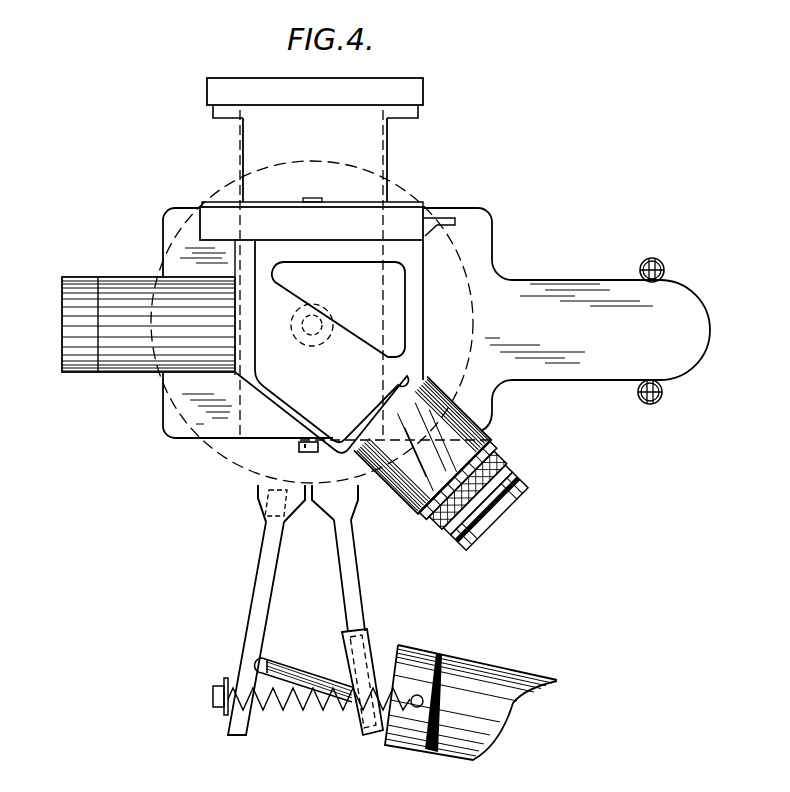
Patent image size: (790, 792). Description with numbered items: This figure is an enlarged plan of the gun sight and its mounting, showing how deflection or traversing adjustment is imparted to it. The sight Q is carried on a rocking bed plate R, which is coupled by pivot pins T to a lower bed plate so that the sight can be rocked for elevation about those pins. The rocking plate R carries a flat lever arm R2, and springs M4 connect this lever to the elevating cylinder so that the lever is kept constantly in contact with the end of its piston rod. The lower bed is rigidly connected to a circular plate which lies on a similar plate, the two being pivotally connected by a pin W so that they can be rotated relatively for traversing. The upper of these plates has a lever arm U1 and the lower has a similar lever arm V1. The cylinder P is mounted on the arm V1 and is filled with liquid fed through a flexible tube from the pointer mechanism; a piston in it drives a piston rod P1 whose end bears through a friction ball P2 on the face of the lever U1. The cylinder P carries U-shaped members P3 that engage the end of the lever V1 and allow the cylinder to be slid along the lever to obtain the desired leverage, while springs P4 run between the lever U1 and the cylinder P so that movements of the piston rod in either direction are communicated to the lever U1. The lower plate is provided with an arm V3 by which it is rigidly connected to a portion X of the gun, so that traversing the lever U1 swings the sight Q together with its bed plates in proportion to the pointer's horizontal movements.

The portion of the gun X is at (407, 92).
The arm V3 is at (367, 140).
The pivot pins T is at (303, 200).
The bed plate R is at (480, 262).
The lever arm R2 is at (569, 323).
The springs M4 is at (652, 257).
The pin W is at (313, 324).
The sight Q is at (503, 462).
The lever arm U1 is at (265, 565).
The lever arm V1 is at (352, 575).
The cylinder P is at (505, 672).
The piston rod P1 is at (320, 676).
The friction ball P2 is at (262, 662).
The U-shaped members P3 is at (370, 633).
The springs P4 is at (292, 708).